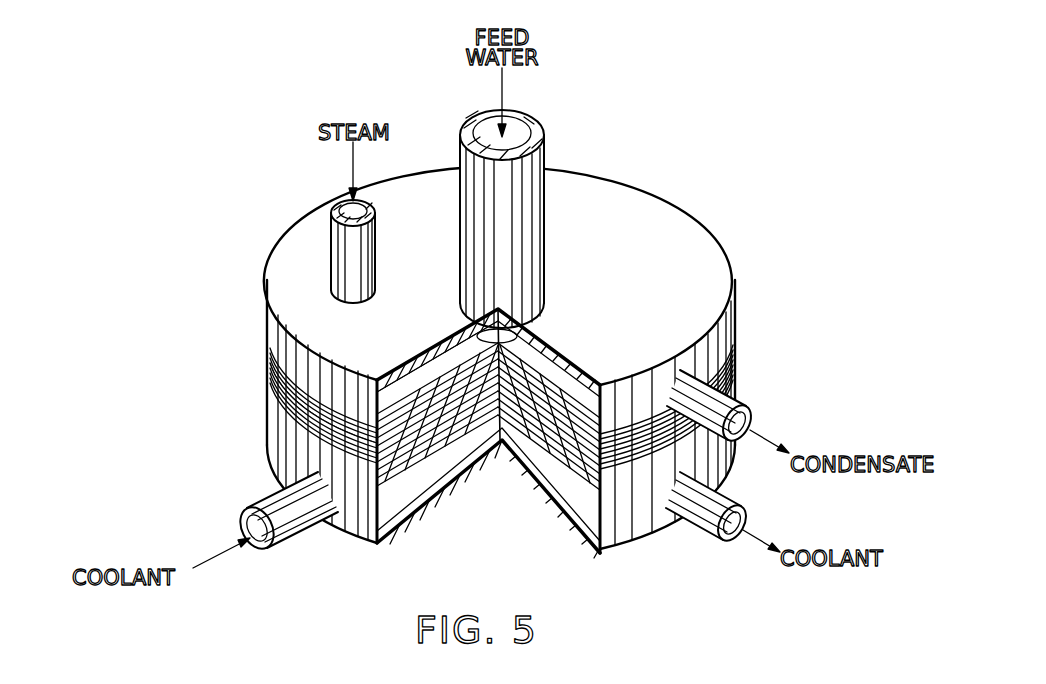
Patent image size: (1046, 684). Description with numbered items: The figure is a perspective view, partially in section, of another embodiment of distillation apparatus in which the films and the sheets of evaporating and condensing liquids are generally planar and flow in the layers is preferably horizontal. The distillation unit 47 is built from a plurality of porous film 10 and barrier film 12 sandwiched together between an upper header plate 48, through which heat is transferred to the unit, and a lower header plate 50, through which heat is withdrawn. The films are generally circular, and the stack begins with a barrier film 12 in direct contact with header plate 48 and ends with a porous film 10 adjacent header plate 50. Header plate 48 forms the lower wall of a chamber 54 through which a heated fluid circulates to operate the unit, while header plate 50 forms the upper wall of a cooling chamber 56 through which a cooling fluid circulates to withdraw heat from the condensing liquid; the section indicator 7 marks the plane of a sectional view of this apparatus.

The distillation unit 47 is at (742, 338).
The chamber 54 is at (415, 358).
The lower header plate 50 is at (460, 433).
The cooling chamber 56 is at (567, 495).
The upper header plate 48 is at (433, 393).
The porous film 10 is at (323, 476).
The barrier film 12 is at (365, 462).
The section line of FIG. 7 is at (565, 203).